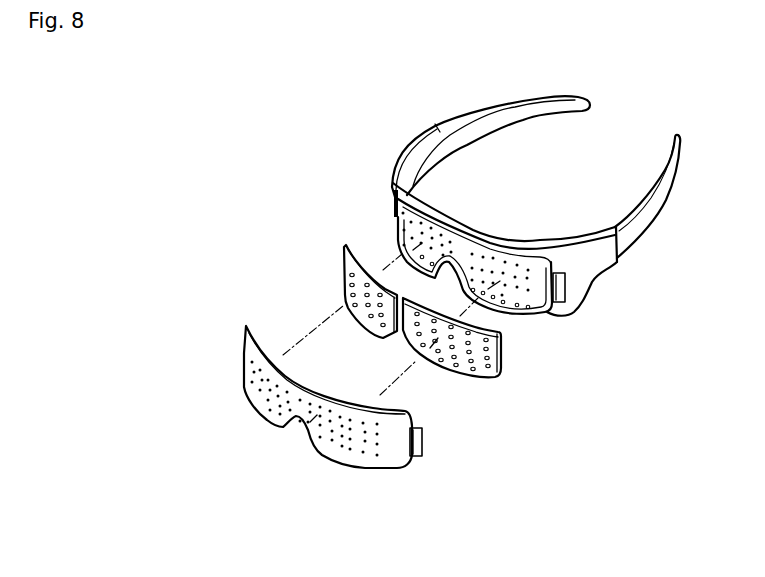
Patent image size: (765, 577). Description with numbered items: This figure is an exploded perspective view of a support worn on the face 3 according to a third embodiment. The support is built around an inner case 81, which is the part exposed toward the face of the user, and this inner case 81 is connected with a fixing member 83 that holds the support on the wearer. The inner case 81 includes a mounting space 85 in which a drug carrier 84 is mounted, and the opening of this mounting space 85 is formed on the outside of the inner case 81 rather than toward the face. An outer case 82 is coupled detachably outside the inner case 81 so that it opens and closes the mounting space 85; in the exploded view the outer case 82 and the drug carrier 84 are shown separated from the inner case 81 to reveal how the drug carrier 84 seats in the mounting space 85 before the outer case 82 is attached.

The support worn on the face 3 is at (318, 125).
The inner case 81 is at (587, 273).
The outer case 82 is at (393, 461).
The fixing member 83 is at (640, 230).
The drug carrier 84 is at (488, 370).
The mounting space 85 is at (459, 263).